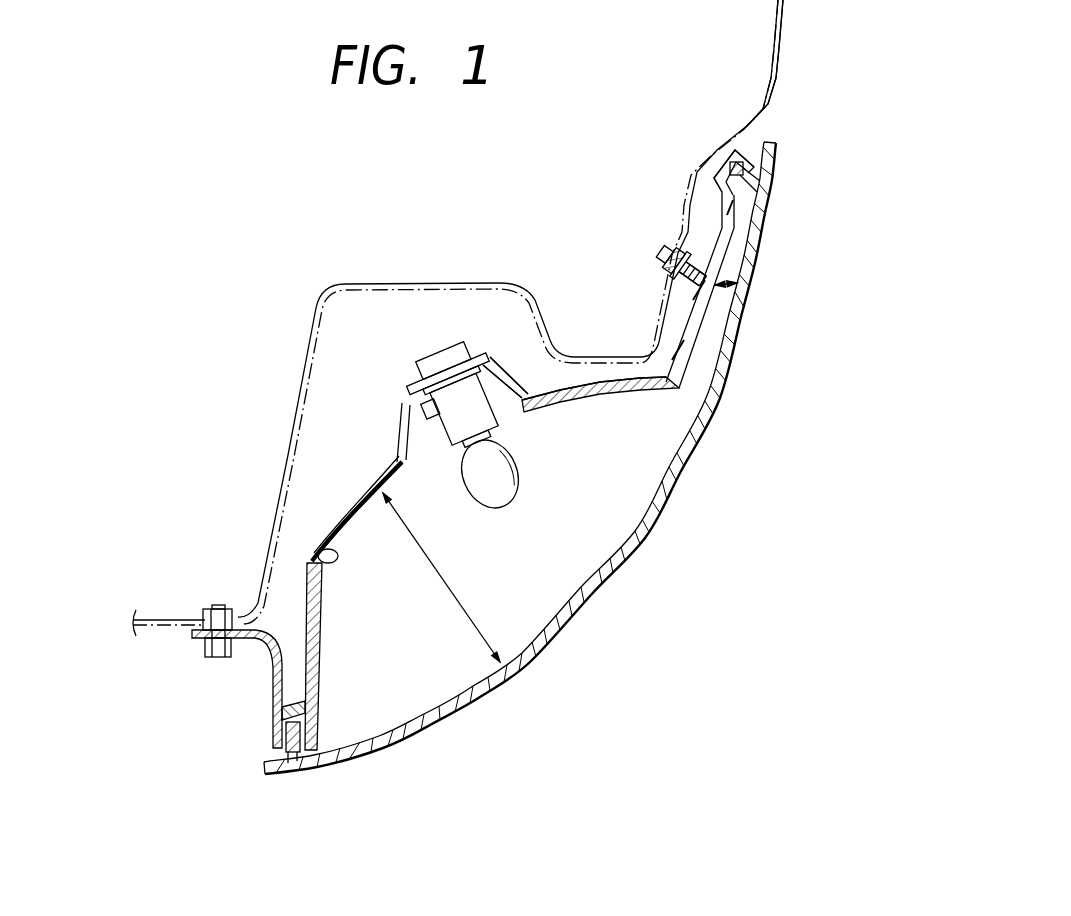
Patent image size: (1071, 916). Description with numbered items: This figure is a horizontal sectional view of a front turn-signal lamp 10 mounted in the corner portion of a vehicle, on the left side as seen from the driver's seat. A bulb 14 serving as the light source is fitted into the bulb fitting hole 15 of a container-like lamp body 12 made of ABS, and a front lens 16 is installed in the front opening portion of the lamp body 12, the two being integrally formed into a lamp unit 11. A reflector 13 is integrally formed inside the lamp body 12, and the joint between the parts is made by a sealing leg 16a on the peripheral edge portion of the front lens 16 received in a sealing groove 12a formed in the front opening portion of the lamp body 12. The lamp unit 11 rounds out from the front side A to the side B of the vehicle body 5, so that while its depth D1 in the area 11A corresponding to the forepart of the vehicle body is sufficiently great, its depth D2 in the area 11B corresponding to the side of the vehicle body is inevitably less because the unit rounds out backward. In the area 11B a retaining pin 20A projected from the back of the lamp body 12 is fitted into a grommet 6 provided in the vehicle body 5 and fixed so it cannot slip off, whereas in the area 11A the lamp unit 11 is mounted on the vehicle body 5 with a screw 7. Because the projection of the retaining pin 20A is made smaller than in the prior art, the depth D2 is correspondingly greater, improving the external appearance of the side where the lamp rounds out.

The vehicle body 5 is at (297, 328).
The grommet 6 is at (648, 278).
The screw 7 is at (214, 658).
The front turn-signal lamp 10 is at (581, 711).
The lamp unit 11 is at (518, 687).
The area corresponding to the forepart of the vehicle body 11A is at (390, 765).
The area corresponding to the side of the vehicle body 11B is at (742, 365).
The lamp body 12 is at (337, 520).
The sealing groove 12a is at (283, 752).
The reflector 13 is at (612, 392).
The bulb 14 is at (548, 487).
The bulb fitting hole 15 is at (434, 378).
The front lens 16 is at (563, 606).
The sealing leg 16a is at (273, 738).
The retaining pin 20A is at (655, 247).
The front side of the vehicle body A is at (157, 645).
The side of the vehicle body B is at (800, 41).
The depth of the lamp unit in the forepart area D1 is at (441, 577).
The depth of the lamp unit in the side area D2 is at (740, 284).